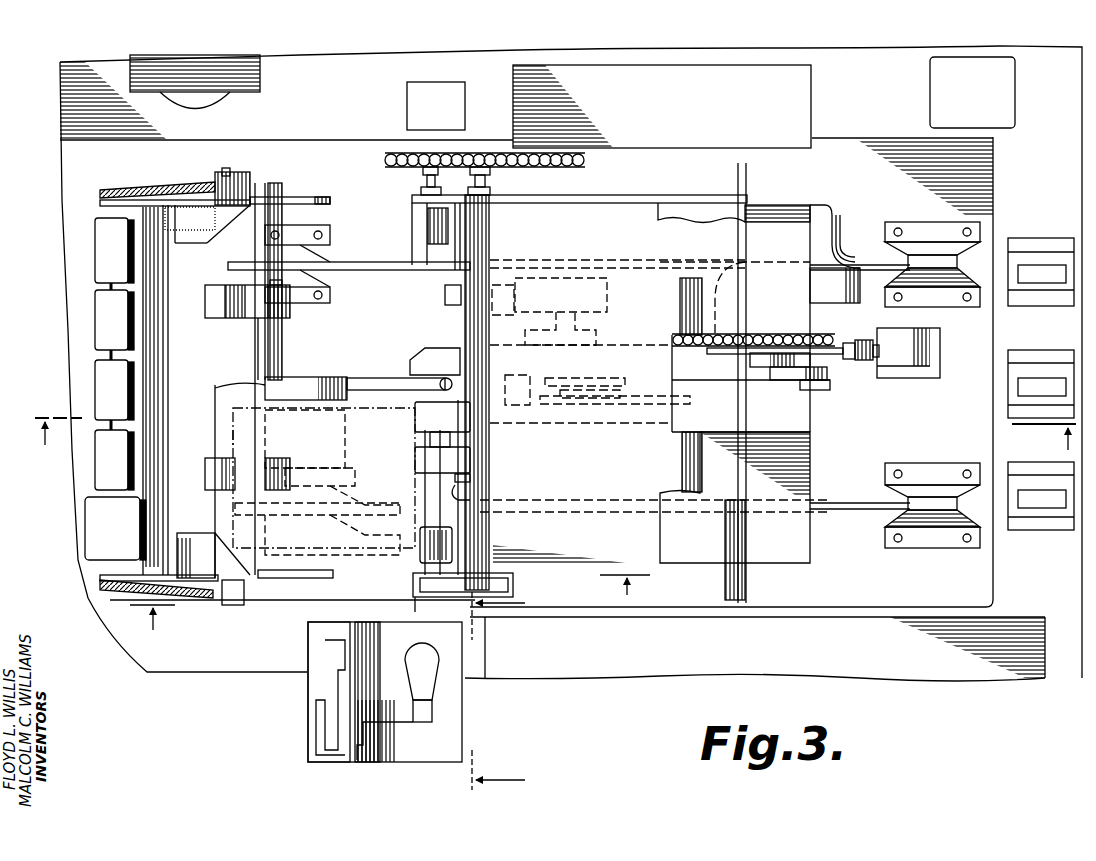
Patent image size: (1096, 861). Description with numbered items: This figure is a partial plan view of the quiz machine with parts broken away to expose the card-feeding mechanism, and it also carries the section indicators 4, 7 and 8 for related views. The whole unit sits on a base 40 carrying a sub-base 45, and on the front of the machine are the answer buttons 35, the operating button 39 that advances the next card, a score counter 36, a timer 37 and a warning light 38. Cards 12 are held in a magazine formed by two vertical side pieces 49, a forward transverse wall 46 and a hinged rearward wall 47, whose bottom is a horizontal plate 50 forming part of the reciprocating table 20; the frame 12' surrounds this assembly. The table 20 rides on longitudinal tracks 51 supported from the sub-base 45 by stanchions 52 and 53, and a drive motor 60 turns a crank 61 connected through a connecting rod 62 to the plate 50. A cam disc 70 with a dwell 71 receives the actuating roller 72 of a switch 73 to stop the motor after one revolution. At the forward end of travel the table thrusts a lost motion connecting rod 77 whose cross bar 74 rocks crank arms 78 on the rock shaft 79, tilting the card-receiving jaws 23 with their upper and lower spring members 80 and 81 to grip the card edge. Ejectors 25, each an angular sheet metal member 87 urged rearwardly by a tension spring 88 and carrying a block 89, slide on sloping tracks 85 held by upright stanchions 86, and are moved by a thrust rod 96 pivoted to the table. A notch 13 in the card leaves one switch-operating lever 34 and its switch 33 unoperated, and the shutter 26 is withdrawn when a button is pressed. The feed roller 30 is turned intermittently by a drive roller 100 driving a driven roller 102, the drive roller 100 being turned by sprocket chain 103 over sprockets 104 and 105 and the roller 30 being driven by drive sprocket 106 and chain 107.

The section line 4- 4 is at (546, 439).
The section line 7- 7 is at (390, 616).
The section line 8- 8 is at (508, 691).
The card 12 is at (306, 382).
The carriage frame 12' is at (296, 468).
The notch 13 is at (470, 478).
The reciprocating table 20 is at (632, 220).
The card-receiving jaws 23 is at (205, 305).
The ejectors 25 is at (277, 196).
The shutter 26 is at (233, 437).
The feed roller 30 is at (455, 540).
The switch 33 is at (472, 415).
The switch-operating lever 34 is at (470, 498).
The buttons 35 is at (90, 300).
The score counter 36 is at (662, 106).
The timer 37 is at (1000, 88).
The warning light 38 is at (430, 686).
The operating button 39 is at (90, 505).
The base 40 is at (1066, 676).
The sub-base 45 is at (988, 576).
The forward transverse wall 46 is at (482, 232).
The rearward wall 47 is at (735, 540).
The vertical side pieces 49 is at (605, 188).
The horizontal plate 50 is at (785, 207).
The longitudinal tracks 51 is at (860, 264).
The vertical stanchion 52 is at (932, 245).
The vertical stanchion 53 is at (330, 255).
The drive motor 60 is at (820, 214).
The crank 61 is at (786, 370).
The connecting rod 62 is at (708, 383).
The cam disc 70 is at (830, 355).
The dwell 71 is at (848, 343).
The actuating roller 72 is at (860, 343).
The switch 73 is at (890, 368).
The cross bar 74 is at (282, 346).
The lost motion connecting rod 77 is at (366, 378).
The crank arms 78 is at (290, 312).
The rock shaft 79 is at (255, 330).
The upper spring member 80 is at (205, 297).
The lower spring member 81 is at (233, 290).
The sloping tracks 85 is at (305, 197).
The upright stanchions 86 is at (100, 203).
The angular sheet metal member 87 is at (237, 185).
The tension spring 88 is at (148, 187).
The block 89 is at (170, 212).
The thrust rod 96 is at (445, 598).
The drive roller 100 is at (607, 294).
The driven roller 102 is at (443, 293).
The sprocket chain 103 is at (692, 348).
The sprocket 104 is at (735, 334).
The sprocket 105 is at (546, 338).
The drive sprocket 106 is at (488, 157).
The chain 107 is at (535, 165).